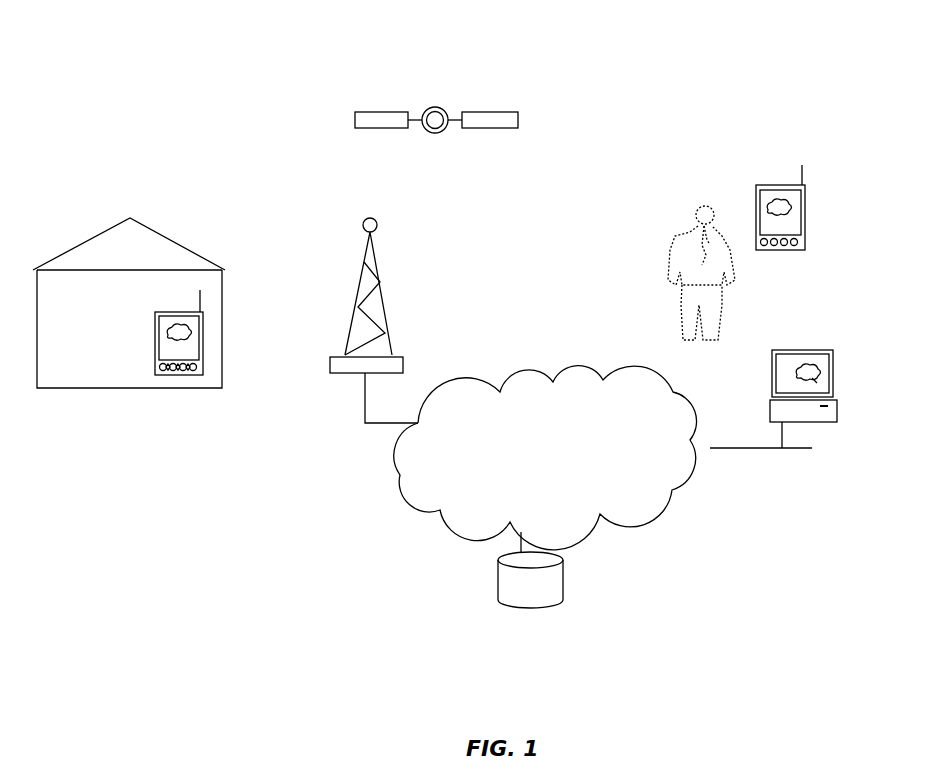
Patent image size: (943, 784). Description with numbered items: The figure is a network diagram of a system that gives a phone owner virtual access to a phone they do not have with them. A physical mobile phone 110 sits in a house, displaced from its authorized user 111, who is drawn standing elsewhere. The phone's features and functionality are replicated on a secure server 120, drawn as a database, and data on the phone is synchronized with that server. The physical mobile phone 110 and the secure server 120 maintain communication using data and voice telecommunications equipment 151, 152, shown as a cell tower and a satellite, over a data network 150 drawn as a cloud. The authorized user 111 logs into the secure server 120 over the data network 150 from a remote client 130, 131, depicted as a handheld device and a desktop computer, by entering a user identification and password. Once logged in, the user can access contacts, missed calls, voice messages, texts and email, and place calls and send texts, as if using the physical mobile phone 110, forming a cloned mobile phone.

The physical mobile phone 110 is at (152, 352).
The authorized user 111 is at (701, 206).
The secure server 120 is at (565, 605).
The remote client 130 is at (780, 180).
The remote client 131 is at (790, 348).
The data network 150 is at (545, 458).
The telecommunications equipment 151 is at (375, 307).
The telecommunications equipment 152 is at (450, 98).